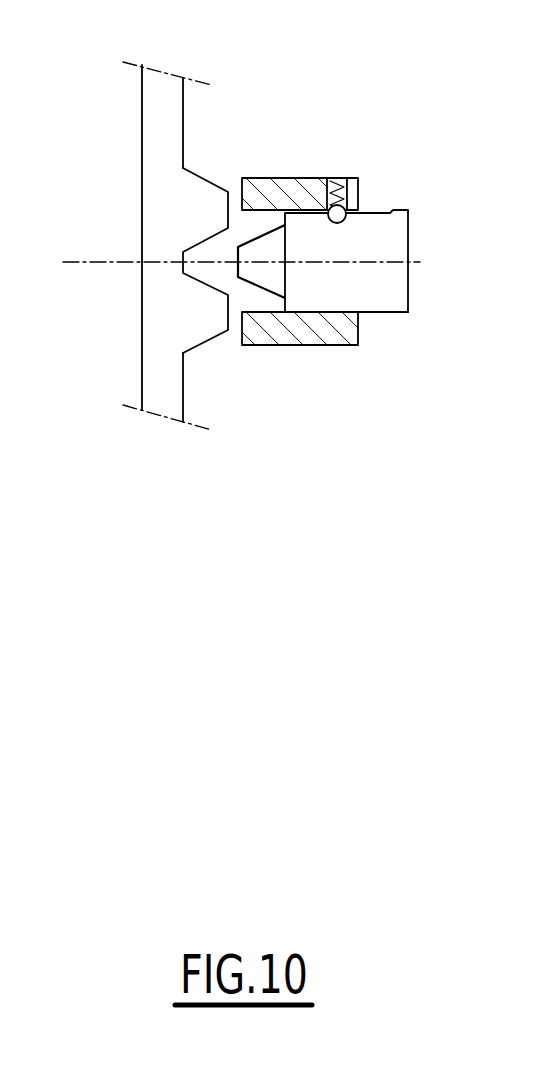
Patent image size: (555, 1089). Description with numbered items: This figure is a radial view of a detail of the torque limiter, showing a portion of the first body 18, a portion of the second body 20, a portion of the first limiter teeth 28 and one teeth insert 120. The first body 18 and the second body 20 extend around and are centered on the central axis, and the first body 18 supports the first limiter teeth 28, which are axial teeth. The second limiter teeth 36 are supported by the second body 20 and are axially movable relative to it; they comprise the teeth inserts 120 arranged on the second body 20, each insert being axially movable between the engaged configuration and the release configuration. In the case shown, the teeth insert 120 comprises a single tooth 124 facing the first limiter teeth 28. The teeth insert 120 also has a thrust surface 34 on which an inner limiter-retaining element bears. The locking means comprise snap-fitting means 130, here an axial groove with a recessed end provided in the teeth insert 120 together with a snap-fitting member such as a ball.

The first body 18 is at (141, 132).
The first limiter teeth 28 is at (215, 213).
The second body 20 is at (303, 180).
The snap-fitting means 130 is at (360, 192).
The thrust surface 34 is at (409, 240).
The teeth insert 120 is at (370, 292).
The tooth 124 is at (253, 240).
The second limiter teeth 36 is at (252, 282).